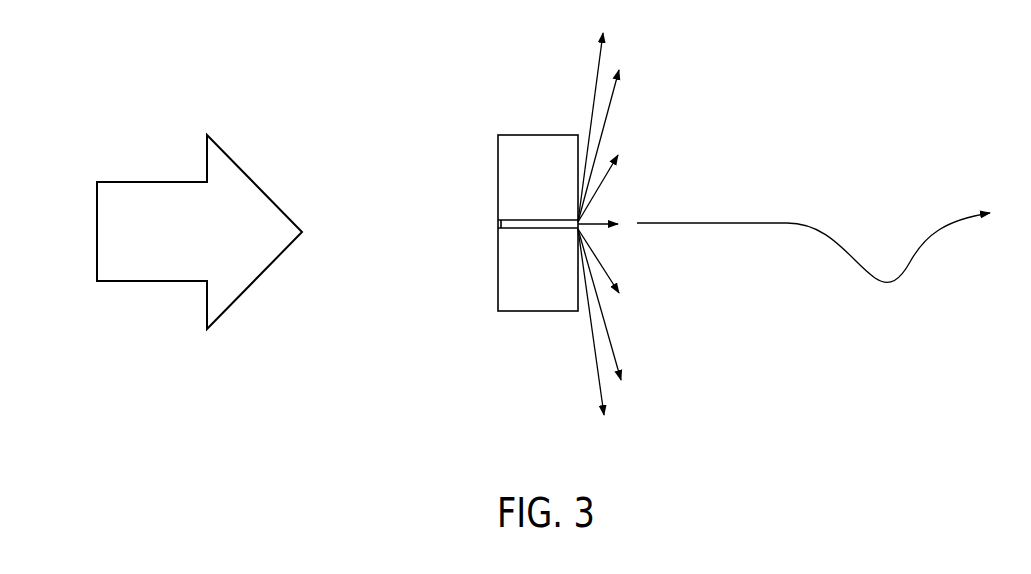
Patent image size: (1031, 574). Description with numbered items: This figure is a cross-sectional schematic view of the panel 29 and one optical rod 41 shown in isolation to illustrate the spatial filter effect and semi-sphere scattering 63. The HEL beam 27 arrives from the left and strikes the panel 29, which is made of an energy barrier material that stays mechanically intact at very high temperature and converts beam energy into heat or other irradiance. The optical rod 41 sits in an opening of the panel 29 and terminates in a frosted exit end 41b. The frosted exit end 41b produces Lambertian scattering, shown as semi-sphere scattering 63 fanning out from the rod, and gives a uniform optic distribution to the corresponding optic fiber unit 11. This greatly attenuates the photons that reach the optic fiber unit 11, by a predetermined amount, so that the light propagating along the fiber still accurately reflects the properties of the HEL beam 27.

The HEL beam 27 is at (154, 287).
The panel 29 is at (516, 165).
The optical rod 41 is at (541, 224).
The frosted exit end 41b is at (578, 229).
The semi-sphere scattering 63 is at (639, 313).
The optic fiber unit 11 is at (727, 224).